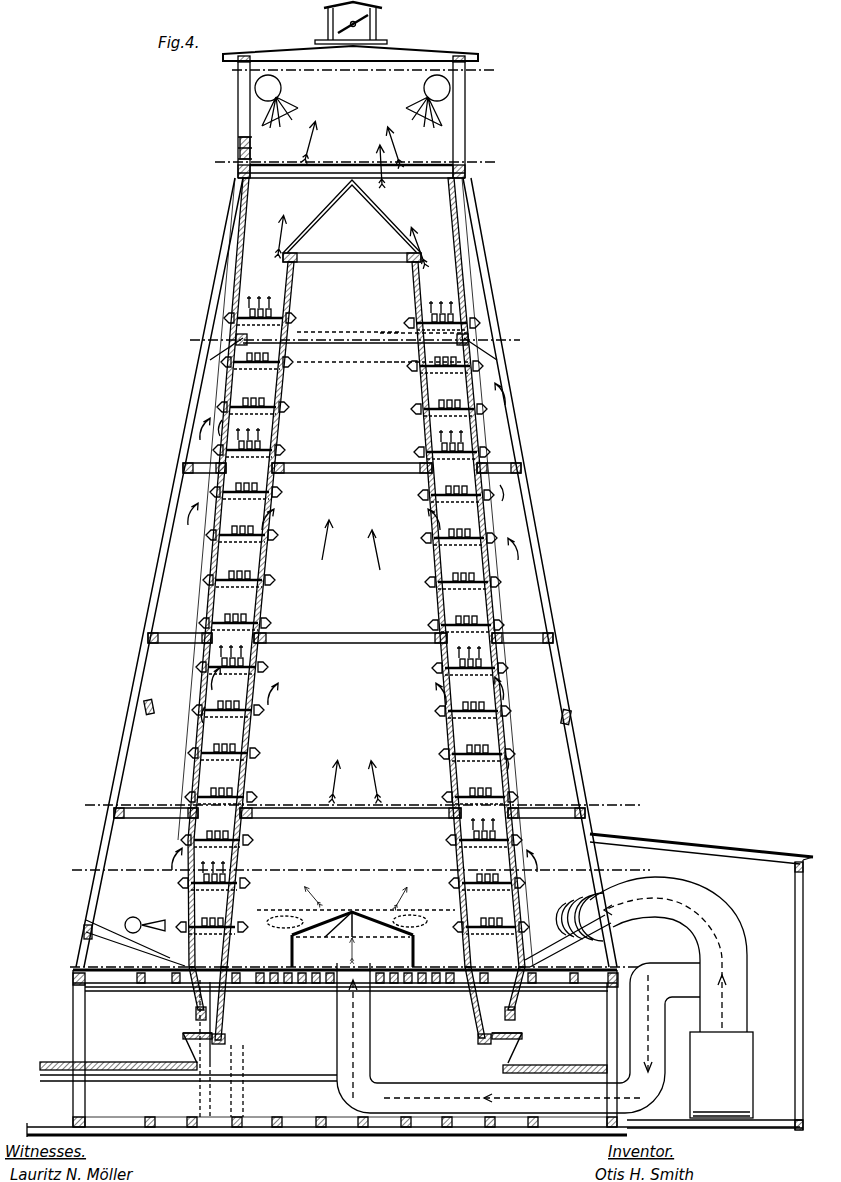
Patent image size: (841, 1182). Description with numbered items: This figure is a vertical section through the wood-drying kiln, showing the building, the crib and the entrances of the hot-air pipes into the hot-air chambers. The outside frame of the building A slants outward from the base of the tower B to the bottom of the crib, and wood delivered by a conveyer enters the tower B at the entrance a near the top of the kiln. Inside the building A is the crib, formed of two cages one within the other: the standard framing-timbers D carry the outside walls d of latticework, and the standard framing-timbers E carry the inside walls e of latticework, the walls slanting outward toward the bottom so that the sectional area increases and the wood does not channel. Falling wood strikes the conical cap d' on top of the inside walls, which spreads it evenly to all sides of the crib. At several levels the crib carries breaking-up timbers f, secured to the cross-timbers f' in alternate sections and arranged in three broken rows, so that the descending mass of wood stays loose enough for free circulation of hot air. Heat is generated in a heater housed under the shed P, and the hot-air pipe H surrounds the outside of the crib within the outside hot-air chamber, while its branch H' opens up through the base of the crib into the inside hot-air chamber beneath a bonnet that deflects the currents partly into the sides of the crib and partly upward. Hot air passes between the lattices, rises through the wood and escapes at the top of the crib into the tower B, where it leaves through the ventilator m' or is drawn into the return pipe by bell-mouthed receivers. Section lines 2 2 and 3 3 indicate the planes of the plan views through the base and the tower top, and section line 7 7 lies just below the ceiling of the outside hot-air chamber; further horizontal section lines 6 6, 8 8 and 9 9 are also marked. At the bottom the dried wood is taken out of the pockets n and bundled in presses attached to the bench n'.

The ventilator m' is at (379, 23).
The section line 3 3 is at (360, 71).
The section line 9- 9 is at (354, 161).
The tower B is at (456, 125).
The entrance a is at (486, 625).
The conical cap d' is at (352, 221).
The standard framing-timbers of the outside walls of the crib D is at (238, 282).
The standard framing-timbers of the inside walls of the crib E is at (297, 293).
The section line 7 7 is at (353, 346).
The outside walls of the crib d is at (349, 572).
The inside walls of the crib e is at (283, 397).
The breaking-up timbers f is at (347, 580).
The cross-timbers f' is at (351, 595).
The outside frame of the building A is at (157, 582).
The section line 8- 8 is at (355, 805).
The section line 2 2 is at (354, 871).
The section line 6- 6 is at (349, 968).
The shed P is at (752, 880).
The hot-air pipe H is at (666, 948).
The branch of the hot-air pipe H' is at (518, 1027).
The pockets n is at (359, 1005).
The bench n' is at (359, 1046).